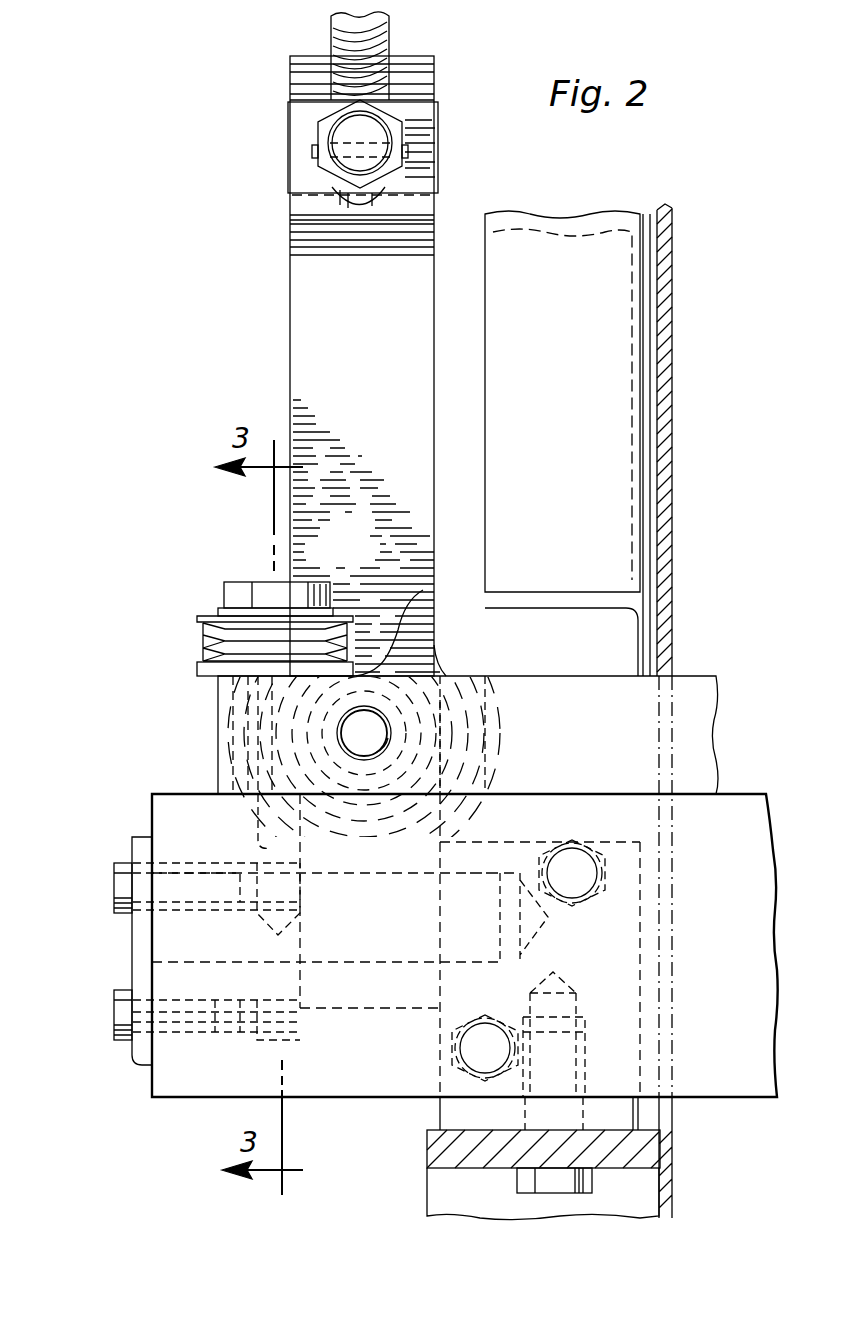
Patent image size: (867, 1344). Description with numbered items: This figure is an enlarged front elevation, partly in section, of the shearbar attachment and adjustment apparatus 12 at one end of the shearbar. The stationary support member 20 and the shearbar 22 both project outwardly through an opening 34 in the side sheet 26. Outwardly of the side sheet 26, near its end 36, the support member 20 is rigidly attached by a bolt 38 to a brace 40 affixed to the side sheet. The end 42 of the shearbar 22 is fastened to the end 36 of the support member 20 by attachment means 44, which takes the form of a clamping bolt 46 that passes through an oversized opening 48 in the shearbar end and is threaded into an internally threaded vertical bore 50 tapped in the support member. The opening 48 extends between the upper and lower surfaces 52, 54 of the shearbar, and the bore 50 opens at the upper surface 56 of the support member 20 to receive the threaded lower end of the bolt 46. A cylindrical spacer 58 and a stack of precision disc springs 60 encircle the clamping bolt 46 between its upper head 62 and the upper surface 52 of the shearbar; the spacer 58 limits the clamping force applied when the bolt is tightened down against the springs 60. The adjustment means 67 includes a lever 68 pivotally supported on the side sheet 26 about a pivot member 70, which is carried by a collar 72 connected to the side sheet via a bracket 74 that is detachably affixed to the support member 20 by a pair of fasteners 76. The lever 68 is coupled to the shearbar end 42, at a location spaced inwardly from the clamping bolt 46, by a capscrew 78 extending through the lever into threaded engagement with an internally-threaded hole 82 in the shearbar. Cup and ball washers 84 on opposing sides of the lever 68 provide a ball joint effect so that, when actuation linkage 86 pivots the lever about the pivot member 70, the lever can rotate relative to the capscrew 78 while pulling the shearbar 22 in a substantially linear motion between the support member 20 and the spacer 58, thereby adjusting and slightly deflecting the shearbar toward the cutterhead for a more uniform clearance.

The shearbar attachment and adjustment apparatus 12 is at (150, 603).
The support member 20 is at (752, 842).
The shearbar 22 is at (708, 742).
The side sheet 26 is at (672, 402).
The opening 34 is at (672, 580).
The end of support member 36 is at (236, 1097).
The bolt 38 is at (548, 1182).
The brace 40 is at (428, 1152).
The end of shearbar 42 is at (218, 732).
The attachment means 44 is at (210, 603).
The clamping bolt 46 is at (252, 697).
The opening 48 is at (240, 746).
The internally threaded vertical bore 50 is at (258, 820).
The upper surface of shearbar 52 is at (523, 676).
The lower surface of shearbar 54 is at (500, 800).
The upper surface of support member 56 is at (182, 794).
The cylindrical spacer 58 is at (197, 670).
The disc springs 60 is at (200, 640).
The upper head 62 is at (258, 582).
The adjustment means 67 is at (462, 652).
The lever 68 is at (290, 304).
The pivot member 70 is at (180, 962).
The collar 72 is at (270, 1012).
The bracket 74 is at (132, 980).
The fasteners 76 is at (125, 884).
The capscrew 78 is at (378, 735).
The internally-threaded hole 82 is at (372, 760).
The cup and ball washers 84 is at (423, 590).
The actuation linkage 86 is at (390, 28).